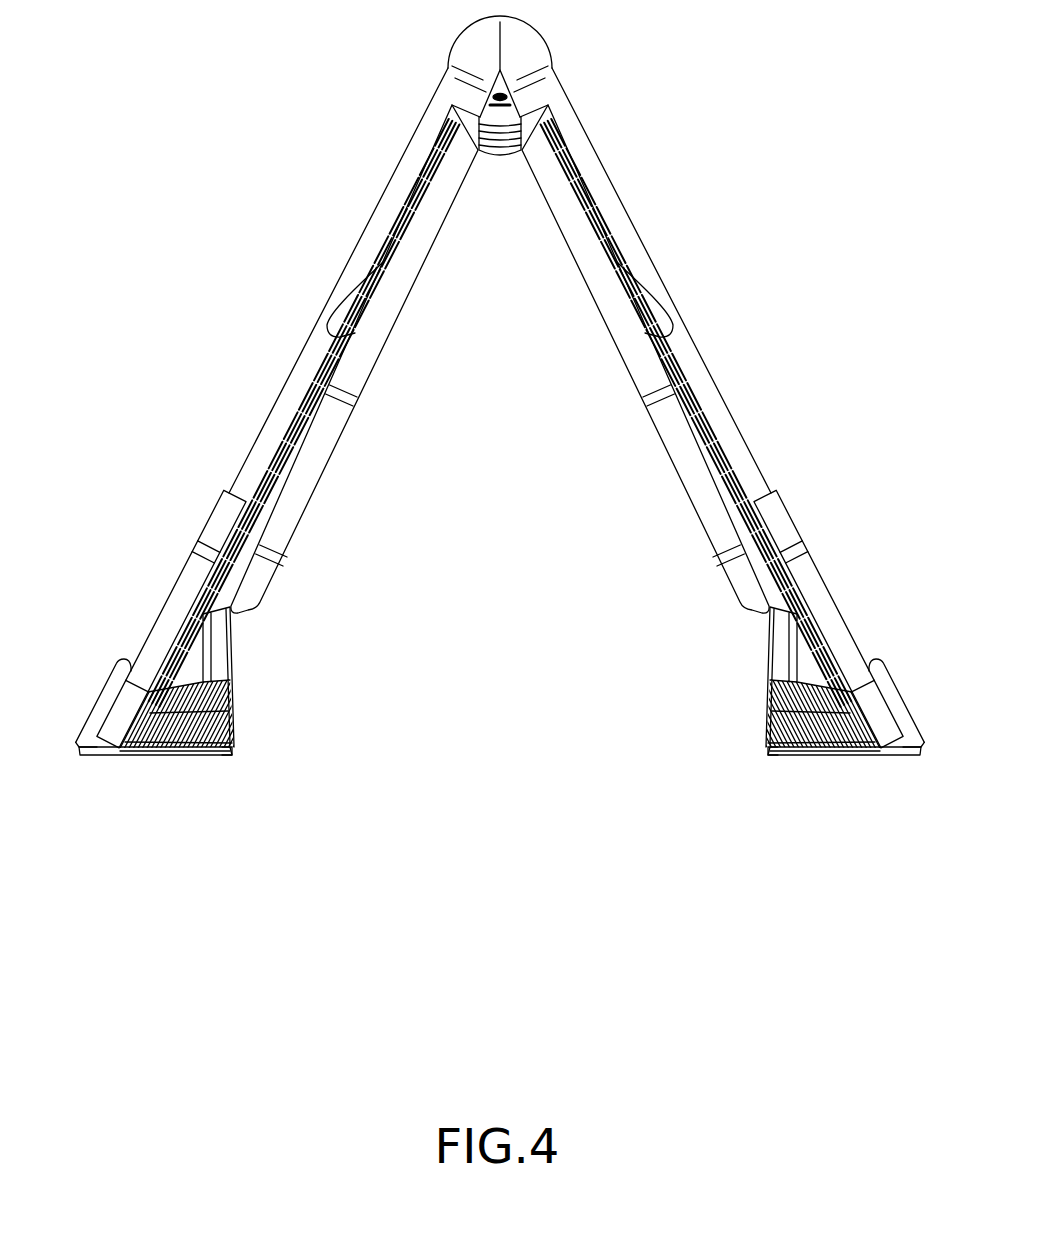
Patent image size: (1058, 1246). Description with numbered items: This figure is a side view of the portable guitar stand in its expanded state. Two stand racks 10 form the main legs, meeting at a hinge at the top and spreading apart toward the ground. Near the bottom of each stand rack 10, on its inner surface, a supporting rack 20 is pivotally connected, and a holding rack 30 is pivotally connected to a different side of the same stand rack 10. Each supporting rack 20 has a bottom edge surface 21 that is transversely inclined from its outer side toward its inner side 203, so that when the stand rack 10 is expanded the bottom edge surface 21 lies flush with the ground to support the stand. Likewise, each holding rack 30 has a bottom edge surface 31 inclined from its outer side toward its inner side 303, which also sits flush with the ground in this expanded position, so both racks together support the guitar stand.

The stand rack 10 is at (296, 388).
The supporting rack 20 is at (252, 692).
The inner side 203 is at (231, 733).
The bottom edge surface 21 is at (213, 753).
The holding rack 30 is at (148, 611).
The bottom edge surface 31 is at (143, 757).
The inner side 303 is at (168, 752).